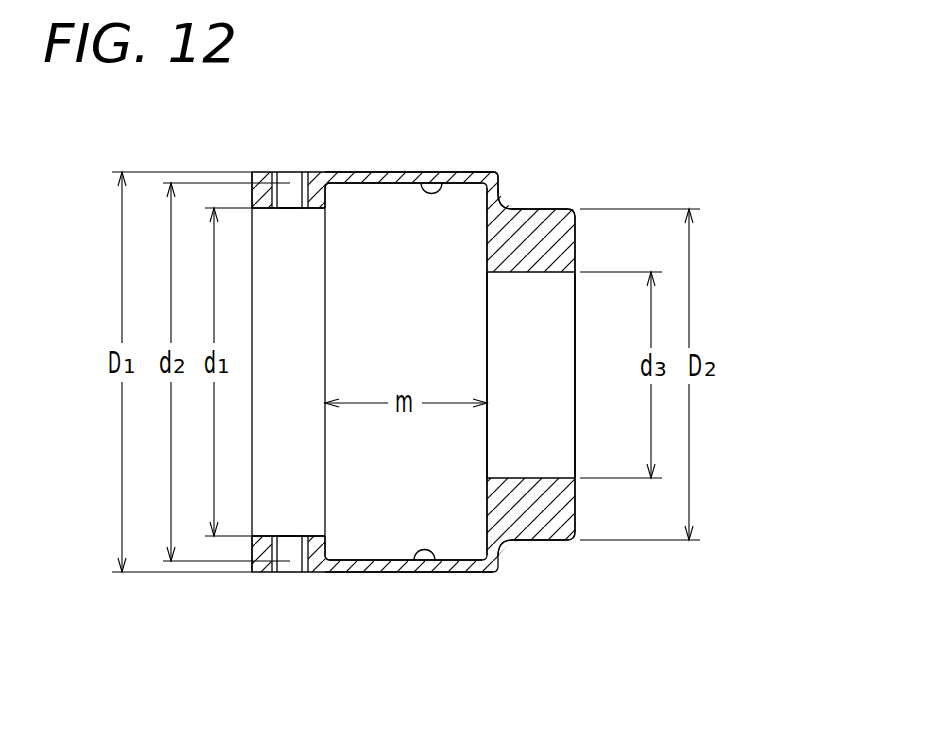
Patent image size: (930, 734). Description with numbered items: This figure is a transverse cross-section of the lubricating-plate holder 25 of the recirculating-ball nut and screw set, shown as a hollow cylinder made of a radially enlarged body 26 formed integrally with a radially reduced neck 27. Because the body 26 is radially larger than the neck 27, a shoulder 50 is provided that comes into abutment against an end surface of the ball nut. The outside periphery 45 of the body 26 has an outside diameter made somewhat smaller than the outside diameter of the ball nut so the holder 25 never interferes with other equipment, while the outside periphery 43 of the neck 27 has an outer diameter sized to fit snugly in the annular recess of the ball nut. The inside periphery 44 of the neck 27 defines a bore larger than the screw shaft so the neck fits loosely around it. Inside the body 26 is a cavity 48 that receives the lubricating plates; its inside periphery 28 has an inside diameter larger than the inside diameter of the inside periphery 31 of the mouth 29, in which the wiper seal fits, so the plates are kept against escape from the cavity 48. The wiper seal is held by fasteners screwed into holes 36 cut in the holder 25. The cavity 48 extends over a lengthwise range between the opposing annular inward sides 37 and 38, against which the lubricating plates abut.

The lubricating-plate holder 25 is at (486, 168).
The radially enlarged body 26 is at (405, 172).
The radially reduced neck 27 is at (545, 232).
The inside periphery of the cavity 28 is at (448, 172).
The mouth 29 is at (257, 172).
The inside periphery of the mouth 31 is at (318, 209).
The holes 36 is at (288, 172).
The annular inward side 37 is at (488, 257).
The inward side 38 is at (330, 195).
The outside periphery of the radially reduced neck 43 is at (535, 208).
The inside periphery of the radially reduced neck 44 is at (527, 274).
The outside periphery of the radially enlarged body 45 is at (355, 172).
The cavity 48 is at (385, 187).
The shoulder 50 is at (503, 195).